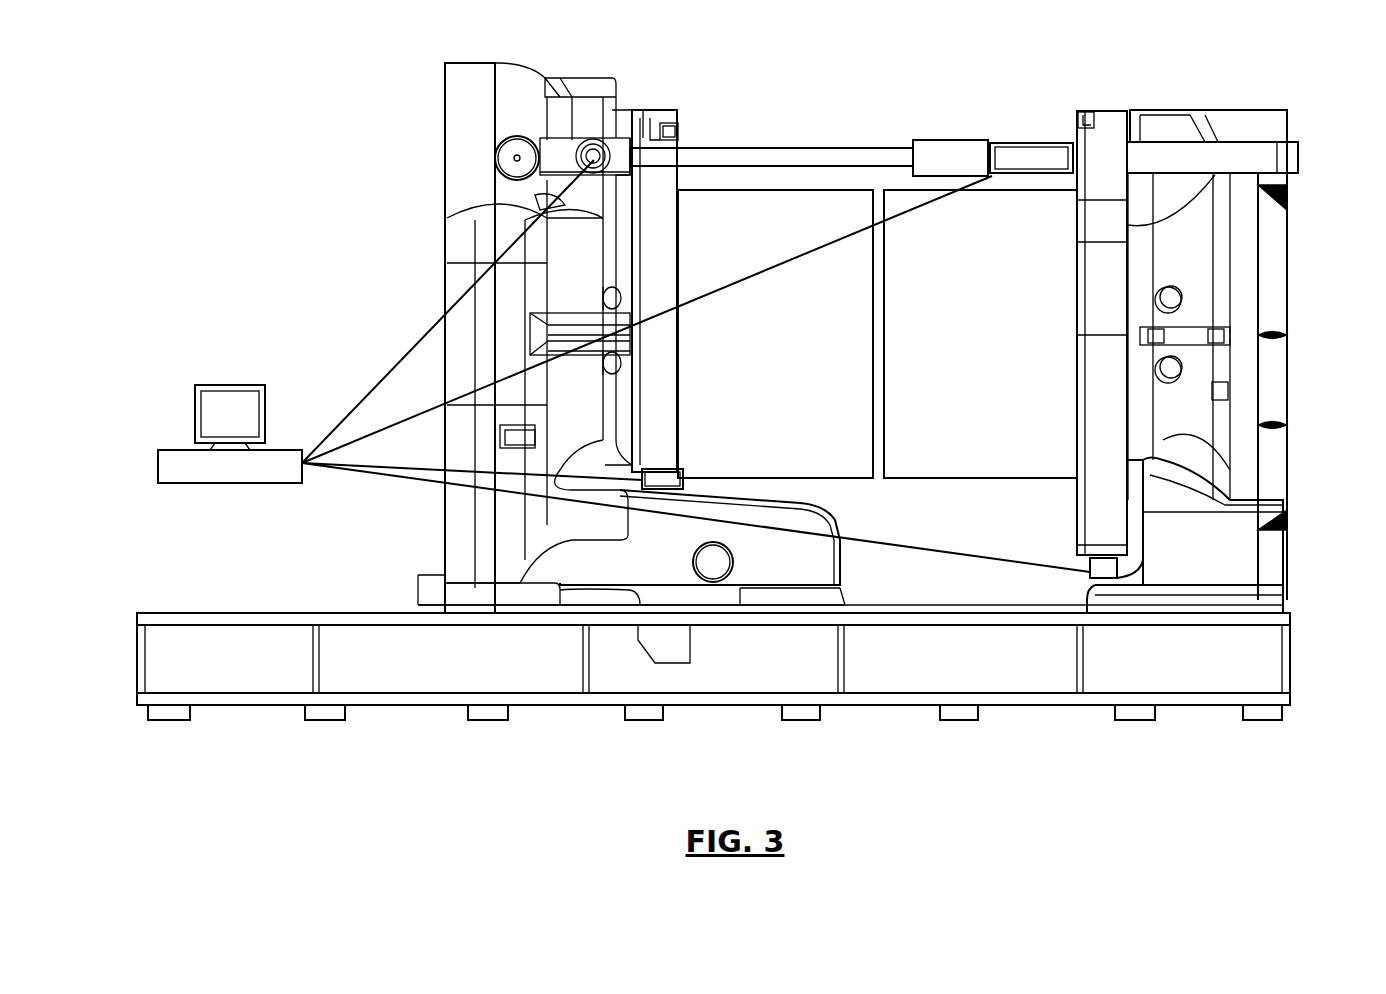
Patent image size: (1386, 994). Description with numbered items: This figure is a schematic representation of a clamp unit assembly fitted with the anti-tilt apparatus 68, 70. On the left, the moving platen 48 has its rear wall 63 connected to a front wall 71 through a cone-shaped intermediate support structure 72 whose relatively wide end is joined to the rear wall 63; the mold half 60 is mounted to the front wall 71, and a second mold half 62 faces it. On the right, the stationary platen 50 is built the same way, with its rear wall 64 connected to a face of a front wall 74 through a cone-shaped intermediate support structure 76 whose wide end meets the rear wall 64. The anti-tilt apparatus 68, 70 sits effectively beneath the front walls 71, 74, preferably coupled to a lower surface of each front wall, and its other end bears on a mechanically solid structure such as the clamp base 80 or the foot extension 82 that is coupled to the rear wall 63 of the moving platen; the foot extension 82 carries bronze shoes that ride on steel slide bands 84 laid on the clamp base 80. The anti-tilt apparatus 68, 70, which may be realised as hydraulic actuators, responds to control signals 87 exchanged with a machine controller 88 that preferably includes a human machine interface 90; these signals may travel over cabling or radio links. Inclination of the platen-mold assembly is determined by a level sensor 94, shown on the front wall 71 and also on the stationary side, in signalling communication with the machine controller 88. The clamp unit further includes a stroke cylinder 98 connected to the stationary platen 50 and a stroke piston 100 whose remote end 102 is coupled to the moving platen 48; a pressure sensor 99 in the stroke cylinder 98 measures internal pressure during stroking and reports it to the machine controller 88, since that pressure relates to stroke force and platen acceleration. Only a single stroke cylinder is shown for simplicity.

The moving platen 48 is at (514, 314).
The stationary platen 50 is at (1241, 314).
The mold half 60 is at (770, 478).
The second fixture 62 is at (955, 478).
The rear wall 63 is at (445, 137).
The rear wall 64 is at (1288, 122).
The anti-tilt apparatus 68 is at (683, 478).
The anti-tilt apparatus 70 is at (1090, 585).
The front wall 71 is at (680, 285).
The cone-shaped intermediate support structure 72 is at (530, 80).
The front wall 74 is at (1077, 512).
The cone-shaped intermediate support structure 76 is at (1192, 445).
The clamp base 80 is at (412, 668).
The foot extension 82 is at (822, 570).
The slide bands 84 is at (920, 613).
The control signals 87 is at (402, 472).
The machine controller 88 is at (240, 483).
The human machine interface 90 is at (232, 385).
The level sensor 94 is at (680, 128).
The stroke cylinder 98 is at (952, 140).
The pressure sensor 99 is at (1015, 143).
The stroke piston 100 is at (758, 148).
The remote end 102 is at (594, 140).